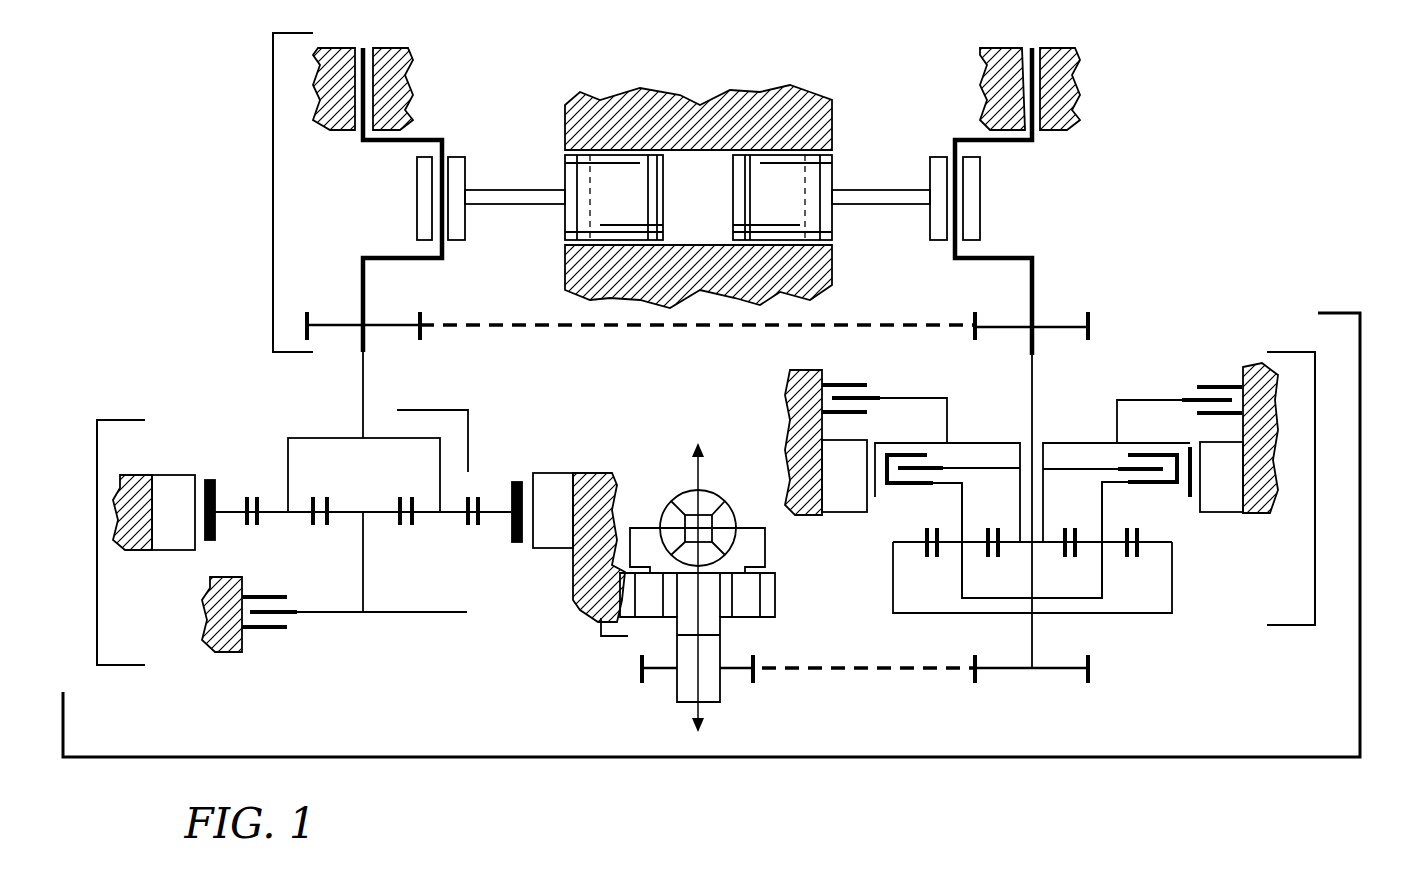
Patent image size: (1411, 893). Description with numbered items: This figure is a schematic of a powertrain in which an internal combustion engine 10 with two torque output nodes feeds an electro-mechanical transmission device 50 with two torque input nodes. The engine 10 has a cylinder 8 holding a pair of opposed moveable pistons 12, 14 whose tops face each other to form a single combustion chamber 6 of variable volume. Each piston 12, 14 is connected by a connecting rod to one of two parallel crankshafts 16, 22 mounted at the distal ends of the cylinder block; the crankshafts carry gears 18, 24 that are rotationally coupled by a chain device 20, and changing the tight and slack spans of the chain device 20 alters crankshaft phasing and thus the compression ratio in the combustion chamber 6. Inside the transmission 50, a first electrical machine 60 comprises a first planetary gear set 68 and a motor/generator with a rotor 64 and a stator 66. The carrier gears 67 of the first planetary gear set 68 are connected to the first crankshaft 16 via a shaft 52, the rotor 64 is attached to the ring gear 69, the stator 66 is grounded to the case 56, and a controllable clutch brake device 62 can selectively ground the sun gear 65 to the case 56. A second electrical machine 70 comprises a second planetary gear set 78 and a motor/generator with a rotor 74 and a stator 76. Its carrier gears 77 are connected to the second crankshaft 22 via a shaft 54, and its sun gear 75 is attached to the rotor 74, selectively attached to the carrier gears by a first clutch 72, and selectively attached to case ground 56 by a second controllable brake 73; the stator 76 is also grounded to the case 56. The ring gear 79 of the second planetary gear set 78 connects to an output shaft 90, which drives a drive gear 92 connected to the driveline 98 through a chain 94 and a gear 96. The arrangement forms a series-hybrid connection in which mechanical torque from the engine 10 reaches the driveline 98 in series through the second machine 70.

The combustion chamber 6 is at (706, 178).
The cylinder 8 is at (696, 142).
The internal combustion engine 10 is at (273, 265).
The moveable piston 12 is at (622, 168).
The moveable piston 14 is at (772, 172).
The first crankshaft 16 is at (367, 90).
The gear 18 is at (340, 323).
The chain device 20 is at (558, 328).
The second crankshaft 22 is at (1040, 95).
The gear 24 is at (1050, 320).
The electro-mechanical transmission device 50 is at (1362, 697).
The shaft 52 is at (363, 388).
The shaft 54 is at (1033, 385).
The case 56 is at (130, 545).
The first electrical machine 60 is at (97, 475).
The clutch brake device 62 is at (292, 620).
The rotor 64 is at (227, 507).
The sun gear 65 is at (375, 516).
The stator 66 is at (553, 548).
The carrier gears 67 is at (425, 516).
The first planetary gear set 68 is at (472, 440).
The ring gear 69 is at (497, 516).
The second electrical machine 70 is at (1317, 588).
The first clutch 72 is at (925, 462).
The second controllable brake 73 is at (1203, 390).
The rotor 74 is at (1187, 500).
The sun gear 75 is at (1055, 538).
The stator 76 is at (1220, 513).
The carrier gears 77 is at (1110, 565).
The second planetary gear set 78 is at (1117, 615).
The ring gear 79 is at (1173, 592).
The output shaft 90 is at (1033, 622).
The drive gear 92 is at (1052, 673).
The chain 94 is at (865, 672).
The gear 96 is at (660, 672).
The driveline 98 is at (605, 636).